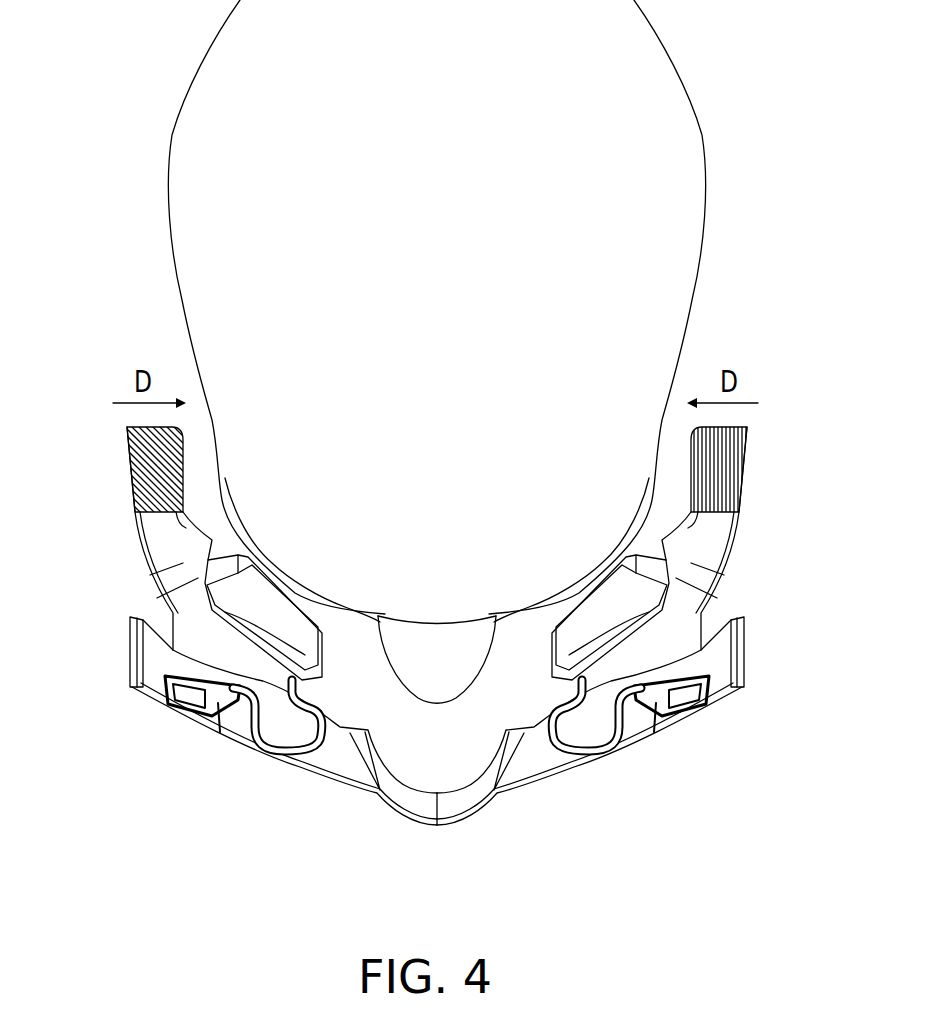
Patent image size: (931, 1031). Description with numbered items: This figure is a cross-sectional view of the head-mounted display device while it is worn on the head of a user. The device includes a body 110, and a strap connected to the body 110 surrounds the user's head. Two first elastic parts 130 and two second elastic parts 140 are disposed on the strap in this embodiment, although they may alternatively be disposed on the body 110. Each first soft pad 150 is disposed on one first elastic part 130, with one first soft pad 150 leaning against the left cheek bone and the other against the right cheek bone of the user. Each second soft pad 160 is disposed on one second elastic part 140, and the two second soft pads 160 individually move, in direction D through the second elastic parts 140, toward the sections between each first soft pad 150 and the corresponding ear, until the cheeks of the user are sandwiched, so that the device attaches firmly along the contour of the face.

The body 110 is at (693, 720).
The first elastic part 130 is at (271, 748).
The second elastic part 140 is at (170, 651).
The first soft pad 150 is at (240, 617).
The second soft pad 160 is at (153, 473).